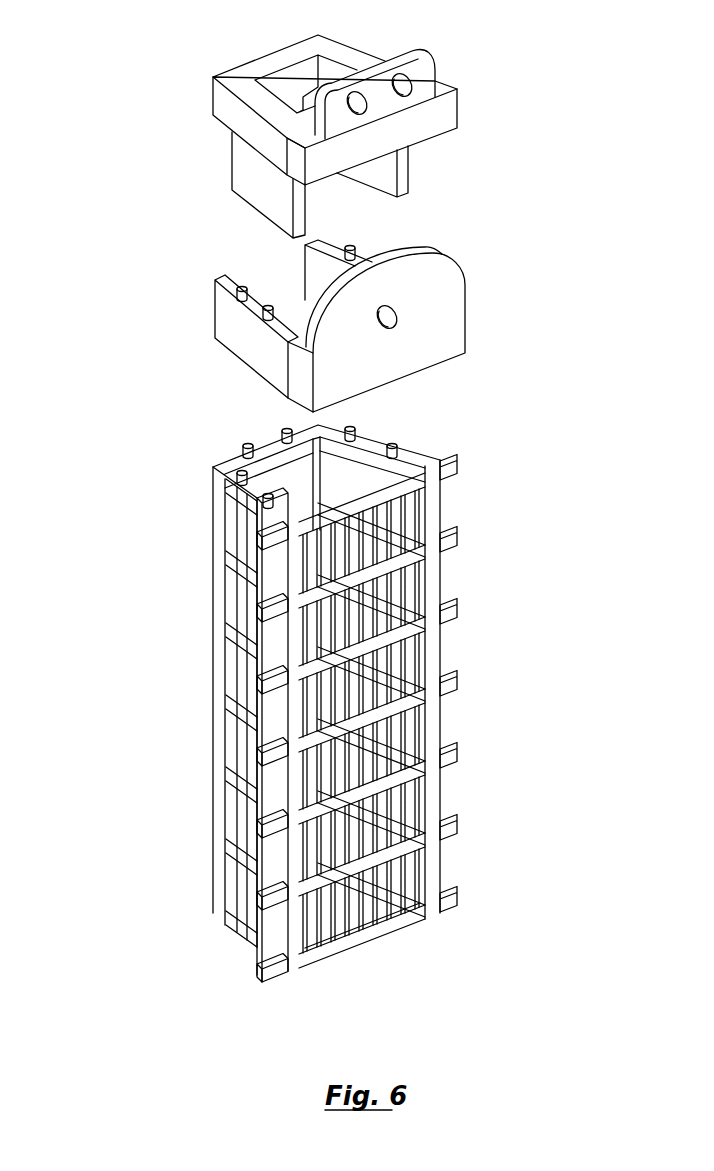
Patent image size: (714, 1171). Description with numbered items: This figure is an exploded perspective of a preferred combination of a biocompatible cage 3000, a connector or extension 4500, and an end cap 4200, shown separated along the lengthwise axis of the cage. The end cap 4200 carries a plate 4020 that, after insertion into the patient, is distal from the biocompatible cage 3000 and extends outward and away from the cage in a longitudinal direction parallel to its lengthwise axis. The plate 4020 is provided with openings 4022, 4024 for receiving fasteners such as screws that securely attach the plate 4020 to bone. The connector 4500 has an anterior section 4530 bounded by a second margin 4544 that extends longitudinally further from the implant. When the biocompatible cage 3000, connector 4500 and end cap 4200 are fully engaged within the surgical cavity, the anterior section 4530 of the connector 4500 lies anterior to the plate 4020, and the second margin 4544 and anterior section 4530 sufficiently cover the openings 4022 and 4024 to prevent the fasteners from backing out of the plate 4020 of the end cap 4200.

The end cap 4200 is at (190, 98).
The plate 4020 is at (397, 121).
The opening 4022 is at (340, 92).
The opening 4024 is at (420, 70).
The connector or extension 4500 is at (209, 303).
The anterior section 4530 is at (405, 351).
The second margin 4544 is at (398, 262).
The biocompatible cage 3000 is at (208, 648).